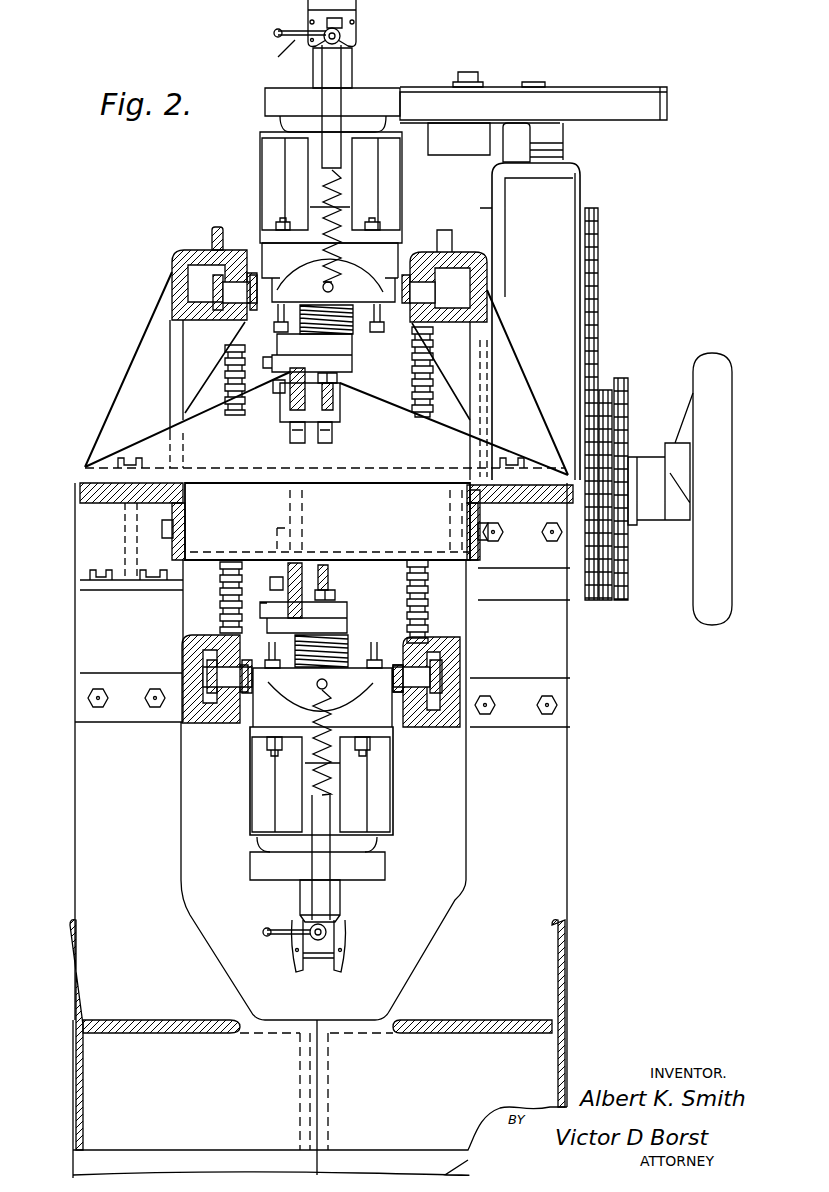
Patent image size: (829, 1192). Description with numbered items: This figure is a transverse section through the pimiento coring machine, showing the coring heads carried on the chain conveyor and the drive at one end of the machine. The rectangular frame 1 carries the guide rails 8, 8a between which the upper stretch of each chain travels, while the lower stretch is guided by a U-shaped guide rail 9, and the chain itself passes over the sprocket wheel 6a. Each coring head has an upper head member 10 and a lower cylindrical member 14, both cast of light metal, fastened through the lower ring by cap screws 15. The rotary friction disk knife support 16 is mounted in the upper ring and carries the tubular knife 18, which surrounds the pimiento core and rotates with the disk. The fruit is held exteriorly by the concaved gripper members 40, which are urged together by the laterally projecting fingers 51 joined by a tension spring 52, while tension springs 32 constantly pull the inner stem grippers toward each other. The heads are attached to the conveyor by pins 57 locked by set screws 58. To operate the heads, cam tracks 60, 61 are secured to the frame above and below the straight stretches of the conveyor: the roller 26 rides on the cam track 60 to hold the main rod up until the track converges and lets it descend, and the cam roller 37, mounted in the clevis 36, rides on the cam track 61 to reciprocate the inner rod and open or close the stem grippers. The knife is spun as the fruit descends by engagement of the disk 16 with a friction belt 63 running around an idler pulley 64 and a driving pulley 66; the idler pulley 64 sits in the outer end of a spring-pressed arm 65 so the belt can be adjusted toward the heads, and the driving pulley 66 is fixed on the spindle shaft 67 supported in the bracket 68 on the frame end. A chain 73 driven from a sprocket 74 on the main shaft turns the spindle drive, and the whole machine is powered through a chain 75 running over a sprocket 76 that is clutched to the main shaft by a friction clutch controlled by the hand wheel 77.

The rectangular frame 1 is at (570, 880).
The U-shaped guide rail 9 is at (172, 724).
The cam track 61 is at (340, 418).
The guide rail 8 is at (172, 294).
The guide rail 8a is at (188, 252).
The lower cylindrical member 14 is at (440, 253).
The pins 57 is at (495, 672).
The sprocket wheel 6a is at (222, 615).
The head member 10 is at (392, 207).
The cap screws 15 is at (283, 225).
The rotary friction disk knife support 16 is at (380, 96).
The tubular knife 18 is at (350, 72).
The concaved gripper members 40 is at (358, 22).
The tension springs 32 is at (274, 33).
The laterally projecting fingers 51 is at (278, 955).
The tension spring 52 is at (264, 930).
The roller 26 is at (324, 482).
The set screws 58 is at (318, 486).
The clevis 36 is at (345, 378).
The cam roller 37 is at (338, 398).
The cam track 60 is at (290, 395).
The friction belt 63 is at (592, 90).
The idler pulley 64 is at (480, 80).
The spindle shaft 67 is at (536, 84).
The driving pulley 66 is at (665, 86).
The arm 65 is at (475, 145).
The bracket 68 is at (583, 172).
The chain 73 is at (599, 330).
The sprocket 74 is at (607, 390).
The chain 75 is at (630, 382).
The sprocket 76 is at (628, 578).
The hand wheel 77 is at (733, 530).